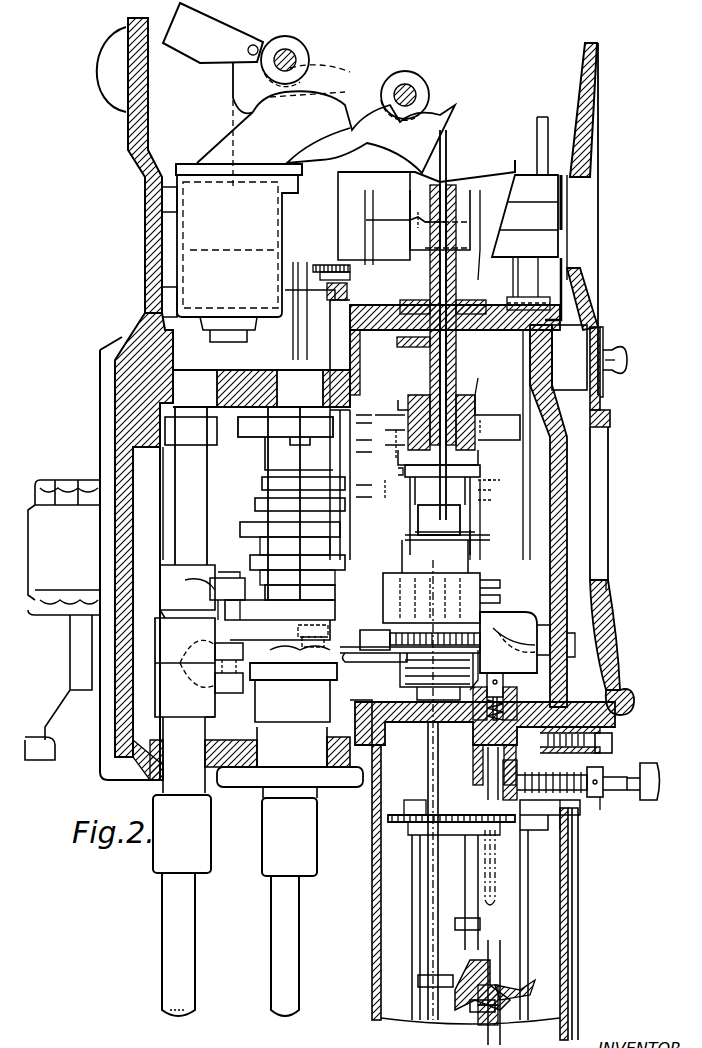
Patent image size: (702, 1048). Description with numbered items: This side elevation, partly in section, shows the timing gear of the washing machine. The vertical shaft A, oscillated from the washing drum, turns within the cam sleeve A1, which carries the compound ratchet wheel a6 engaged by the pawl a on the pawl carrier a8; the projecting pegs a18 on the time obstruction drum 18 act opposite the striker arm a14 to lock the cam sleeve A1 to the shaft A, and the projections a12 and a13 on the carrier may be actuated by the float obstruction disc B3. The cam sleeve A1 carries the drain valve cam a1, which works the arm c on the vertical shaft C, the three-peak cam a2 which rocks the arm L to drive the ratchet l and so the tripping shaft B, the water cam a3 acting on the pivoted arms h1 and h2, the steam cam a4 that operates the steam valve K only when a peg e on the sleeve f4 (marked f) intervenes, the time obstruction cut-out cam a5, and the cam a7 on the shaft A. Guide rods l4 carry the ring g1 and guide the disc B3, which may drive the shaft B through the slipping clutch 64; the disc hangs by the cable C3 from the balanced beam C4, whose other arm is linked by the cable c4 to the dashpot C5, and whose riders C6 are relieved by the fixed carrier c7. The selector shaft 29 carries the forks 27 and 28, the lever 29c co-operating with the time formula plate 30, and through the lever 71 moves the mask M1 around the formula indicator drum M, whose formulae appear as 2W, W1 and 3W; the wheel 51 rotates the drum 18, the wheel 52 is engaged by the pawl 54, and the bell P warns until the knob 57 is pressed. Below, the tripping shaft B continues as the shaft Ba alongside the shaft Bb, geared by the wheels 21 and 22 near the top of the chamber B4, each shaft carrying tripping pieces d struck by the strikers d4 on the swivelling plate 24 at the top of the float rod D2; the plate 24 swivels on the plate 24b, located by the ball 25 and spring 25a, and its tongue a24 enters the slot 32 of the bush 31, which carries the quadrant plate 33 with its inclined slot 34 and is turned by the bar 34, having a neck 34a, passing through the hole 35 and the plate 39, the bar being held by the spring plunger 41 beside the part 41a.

The bell P is at (106, 96).
The steam valve K is at (62, 620).
The balanced beam C4 is at (213, 33).
The rider C6 is at (418, 85).
The fixed carrier c7 is at (323, 120).
The cable c4 is at (232, 118).
The dashpot device C5 is at (210, 250).
The wheel 52 is at (322, 265).
The pawl 54 is at (426, 212).
The pawl a is at (361, 183).
The lever 29c is at (392, 206).
The pawl operated wheel 51 is at (514, 250).
The cable C3 is at (447, 162).
The winding 2W is at (525, 187).
The winding W1 is at (532, 218).
The winding 3W is at (517, 245).
The formula indicator drum M is at (509, 175).
The mask M1 is at (570, 212).
The lever 71 is at (540, 292).
The knob 57 is at (614, 359).
The selector shaft 29 is at (488, 545).
The fork 27 is at (497, 404).
The projecting pegs a18 is at (420, 398).
The time obstruction drum 18 is at (470, 440).
The striker arm a14 is at (372, 425).
The pawl carrier a8 is at (372, 462).
The projection a13 is at (370, 494).
The ring g1 is at (470, 472).
The float obstruction disc B3 is at (425, 516).
The slipping clutch 64 is at (445, 520).
The vertical shaft C is at (185, 711).
The oscillating shaft A is at (292, 711).
The cam a7 is at (246, 420).
The compound ratchet wheel a6 is at (255, 505).
The time obstruction cut-out cam a5 is at (245, 530).
The steam control cam a4 is at (252, 562).
The projection a12 is at (352, 545).
The drain valve cam a1 is at (328, 600).
The cam sleeve A1 is at (280, 619).
The cam a2 is at (333, 630).
The cam a3 is at (338, 676).
The arm c is at (217, 570).
The pivoted arm h1 is at (208, 650).
The pivoted arm h2 is at (225, 690).
The clutch f is at (388, 588).
The sleeve f4 is at (379, 561).
The guide rods l4 is at (438, 556).
The peg e is at (525, 582).
The fork 28 is at (380, 645).
The arm L is at (408, 676).
The ratchet l is at (471, 670).
The bar 34 is at (648, 820).
The quadrant plate 33 is at (535, 675).
The bush 31 is at (545, 712).
The spring controlled plunger 41 is at (472, 770).
The hole 35 is at (478, 790).
The neck 34a is at (632, 768).
The plate 39 is at (602, 800).
The bracket 41a is at (575, 800).
The chamber B4 is at (372, 920).
The tripping shaft B is at (428, 780).
The gear wheel 22 is at (388, 820).
The vertical slot 32 is at (480, 828).
The gear wheel 21 is at (508, 840).
The shaft Bb is at (465, 870).
The shaft Ba is at (412, 890).
The tripping pieces d is at (418, 980).
The tongue a24 is at (495, 935).
The swivelling plate 24 is at (515, 975).
The plate 24b is at (537, 925).
The time formula plate 30 is at (515, 960).
The ball 25 is at (500, 974).
The spring 25a is at (504, 1026).
The striker d4 is at (458, 1008).
The float rod D2 is at (477, 994).